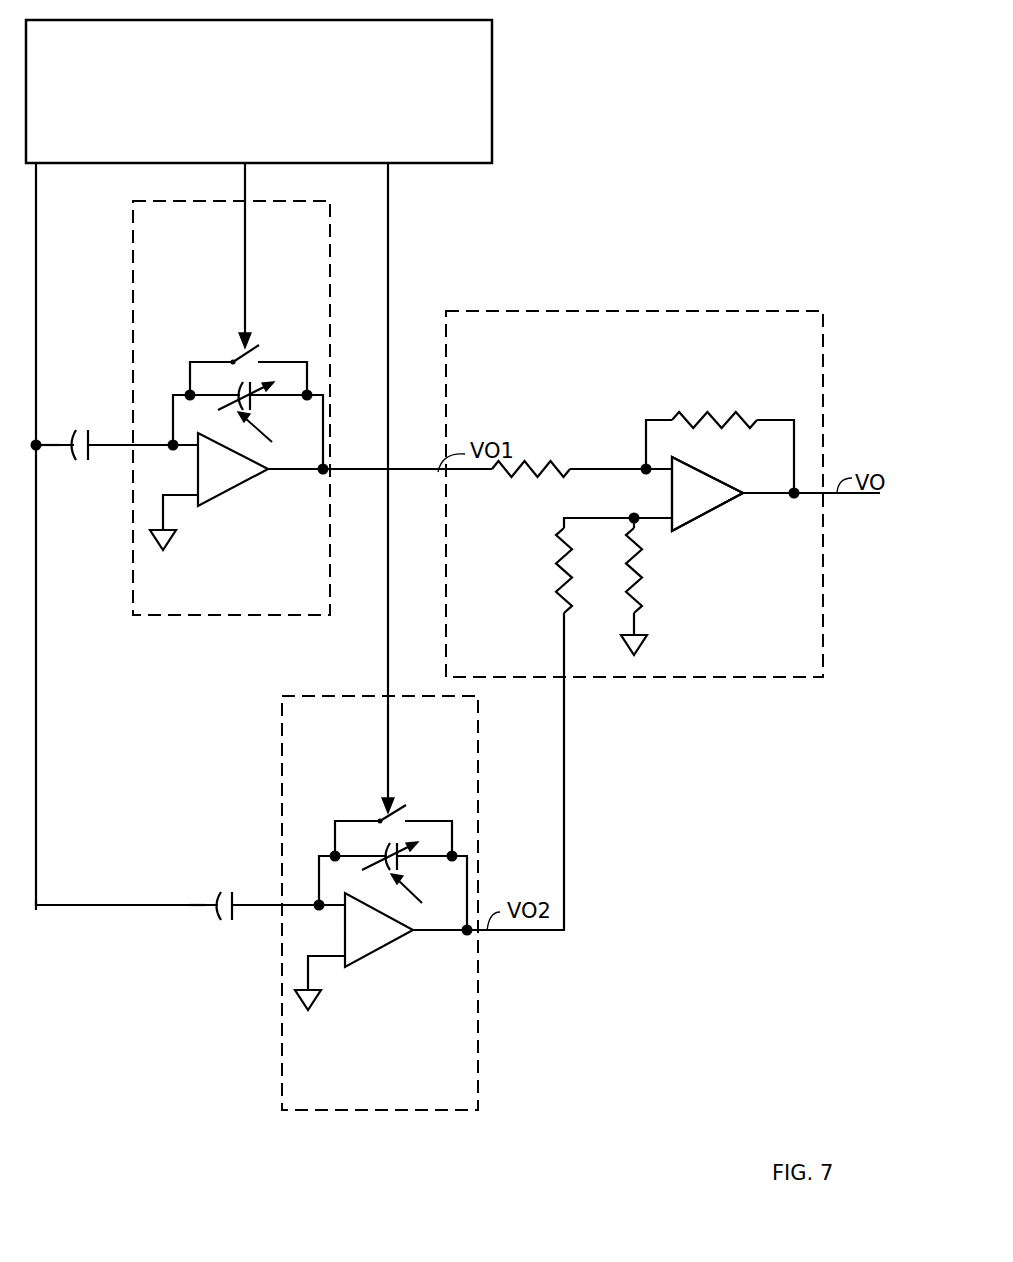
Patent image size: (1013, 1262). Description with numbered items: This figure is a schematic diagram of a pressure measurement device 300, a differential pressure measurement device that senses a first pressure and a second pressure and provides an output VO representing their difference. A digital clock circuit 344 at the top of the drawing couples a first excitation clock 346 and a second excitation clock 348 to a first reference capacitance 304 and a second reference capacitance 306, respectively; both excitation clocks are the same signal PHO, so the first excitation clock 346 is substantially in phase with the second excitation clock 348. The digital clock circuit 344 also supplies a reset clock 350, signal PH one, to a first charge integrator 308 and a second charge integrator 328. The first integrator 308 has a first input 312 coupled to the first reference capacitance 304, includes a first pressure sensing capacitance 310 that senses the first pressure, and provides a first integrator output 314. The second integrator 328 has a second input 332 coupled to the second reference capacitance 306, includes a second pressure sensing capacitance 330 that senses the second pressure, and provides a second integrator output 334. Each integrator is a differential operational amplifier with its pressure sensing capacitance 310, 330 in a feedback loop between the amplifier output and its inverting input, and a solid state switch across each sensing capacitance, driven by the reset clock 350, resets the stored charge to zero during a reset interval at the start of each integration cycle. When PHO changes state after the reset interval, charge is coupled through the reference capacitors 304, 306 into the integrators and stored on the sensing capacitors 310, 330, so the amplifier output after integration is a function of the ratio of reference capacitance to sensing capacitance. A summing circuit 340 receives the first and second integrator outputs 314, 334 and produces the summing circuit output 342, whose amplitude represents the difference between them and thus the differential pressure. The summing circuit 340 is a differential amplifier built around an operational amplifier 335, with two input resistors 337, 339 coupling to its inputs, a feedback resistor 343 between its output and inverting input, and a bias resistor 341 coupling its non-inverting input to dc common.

The pressure measurement device 300 is at (705, 58).
The first reference capacitance 304 is at (78, 430).
The second reference capacitance 306 is at (220, 890).
The first charge integrator 308 is at (133, 203).
The first pressure sensing capacitance 310 is at (236, 392).
The first input 312 is at (108, 445).
The first integrator output 314 is at (351, 480).
The second charge integrator 328 is at (282, 698).
The second pressure sensing capacitance 330 is at (378, 852).
The second input 332 is at (252, 903).
The second integrator output 334 is at (496, 935).
The operational amplifier 335 is at (688, 497).
The input resistor 337 is at (558, 565).
The input resistor 339 is at (522, 469).
The summing circuit 340 is at (480, 311).
The bias resistor 341 is at (640, 573).
The summing circuit output 342 is at (847, 496).
The feedback resistor 343 is at (708, 412).
The digital clock circuit 344 is at (237, 60).
The first excitation clock 346 is at (52, 447).
The second excitation clock 348 is at (197, 905).
The reset clock 350 is at (245, 275).